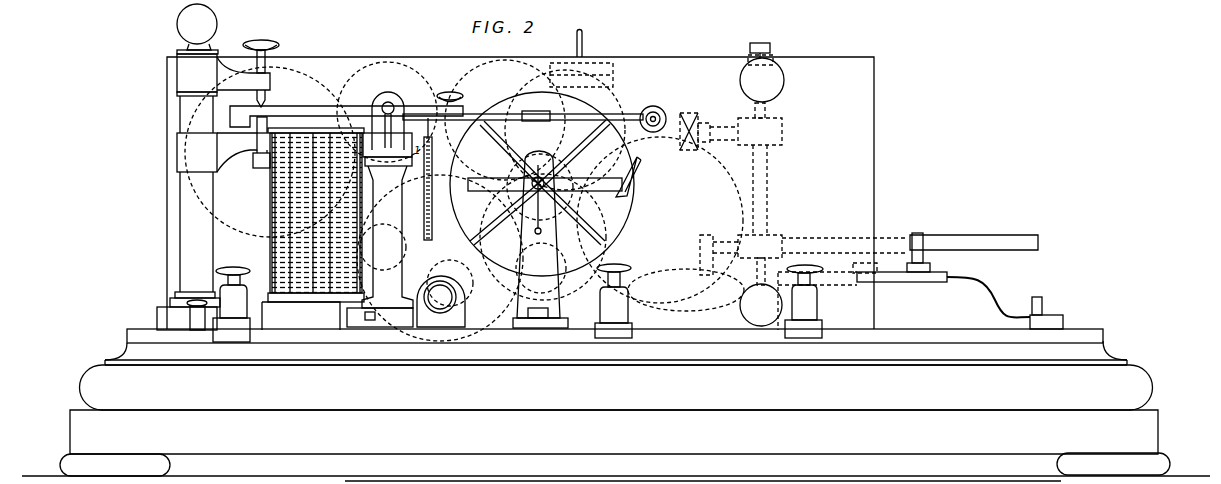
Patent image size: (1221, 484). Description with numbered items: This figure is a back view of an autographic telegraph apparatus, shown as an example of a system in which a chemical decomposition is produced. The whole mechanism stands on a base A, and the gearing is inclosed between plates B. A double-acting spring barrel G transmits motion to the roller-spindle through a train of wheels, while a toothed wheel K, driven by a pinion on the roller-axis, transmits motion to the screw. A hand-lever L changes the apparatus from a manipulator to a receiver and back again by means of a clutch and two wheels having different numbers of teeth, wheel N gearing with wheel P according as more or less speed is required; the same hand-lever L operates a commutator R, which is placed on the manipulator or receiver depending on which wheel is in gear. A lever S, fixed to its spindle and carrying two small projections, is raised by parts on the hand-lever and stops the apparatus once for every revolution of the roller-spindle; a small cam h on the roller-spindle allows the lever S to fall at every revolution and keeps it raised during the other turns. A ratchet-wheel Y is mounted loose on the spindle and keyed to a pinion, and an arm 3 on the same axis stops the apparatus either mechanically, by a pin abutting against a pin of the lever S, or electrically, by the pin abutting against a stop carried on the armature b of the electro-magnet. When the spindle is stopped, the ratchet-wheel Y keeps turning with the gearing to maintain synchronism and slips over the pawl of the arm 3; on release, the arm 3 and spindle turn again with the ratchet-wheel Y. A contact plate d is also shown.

The base A is at (616, 405).
The plates B is at (520, 193).
The double-acting spring barrel G is at (307, 198).
The armature b is at (436, 109).
The contact plate d is at (527, 112).
The ratchet-wheel Y is at (543, 179).
The arm 3 is at (540, 188).
The cam h is at (540, 239).
The wheel N is at (581, 59).
The wheel P is at (567, 130).
The lever S is at (528, 120).
The toothed wheel K is at (660, 220).
The hand-lever L is at (859, 186).
The commutator R is at (975, 301).